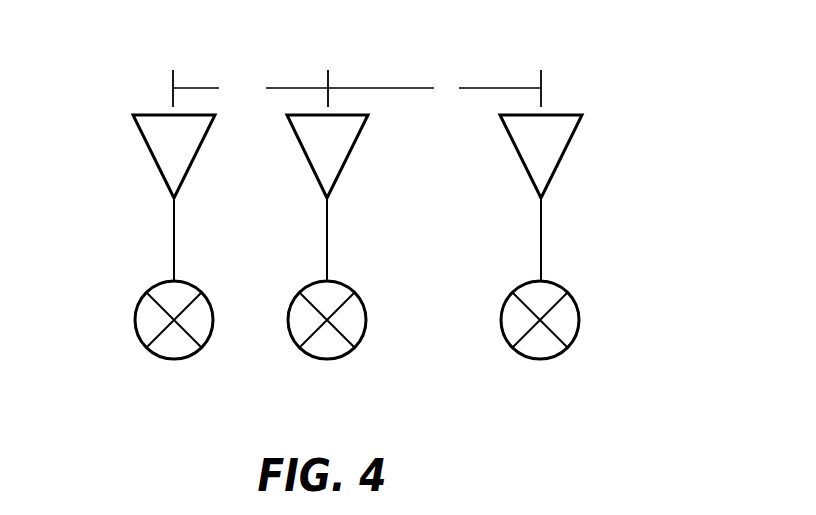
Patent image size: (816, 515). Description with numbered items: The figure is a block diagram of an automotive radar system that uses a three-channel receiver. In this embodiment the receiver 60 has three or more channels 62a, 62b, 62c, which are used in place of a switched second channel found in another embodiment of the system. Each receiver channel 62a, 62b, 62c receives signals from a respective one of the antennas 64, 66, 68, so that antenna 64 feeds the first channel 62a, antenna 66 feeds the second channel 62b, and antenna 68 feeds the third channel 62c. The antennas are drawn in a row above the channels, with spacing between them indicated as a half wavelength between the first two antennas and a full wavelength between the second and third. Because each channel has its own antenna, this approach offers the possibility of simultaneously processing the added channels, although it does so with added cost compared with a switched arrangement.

The receiver 60 is at (617, 95).
The receiver channel 62a is at (134, 320).
The receiver channel 62b is at (367, 318).
The receiver channel 62c is at (581, 318).
The antenna 64 is at (148, 146).
The antenna 66 is at (318, 180).
The antenna 68 is at (533, 181).